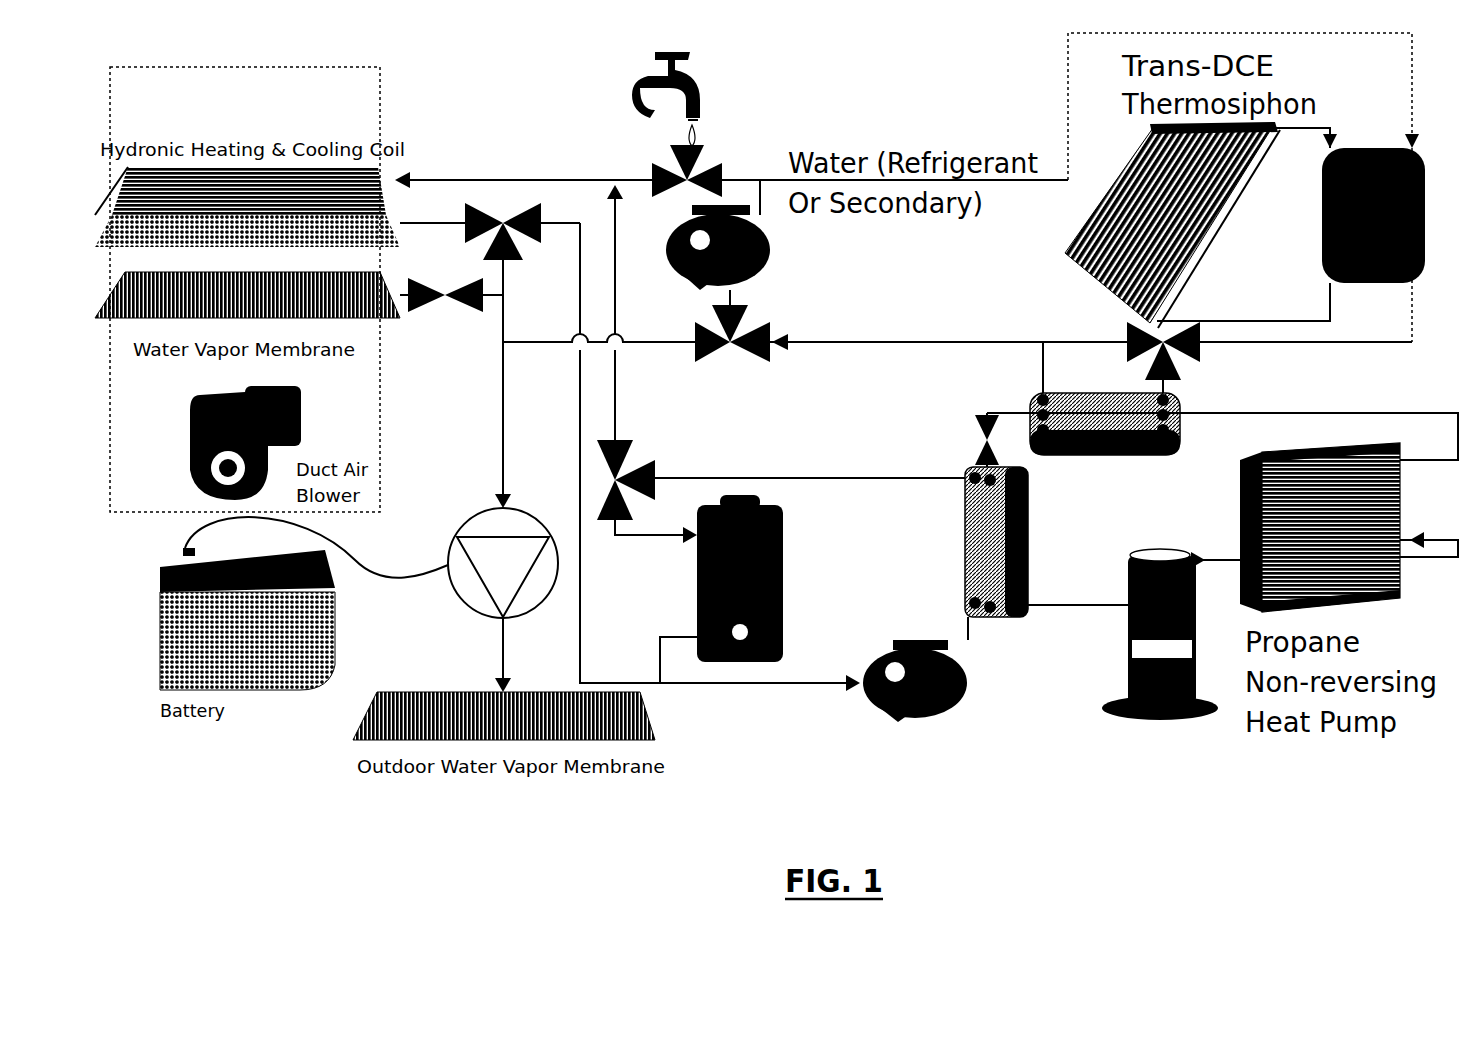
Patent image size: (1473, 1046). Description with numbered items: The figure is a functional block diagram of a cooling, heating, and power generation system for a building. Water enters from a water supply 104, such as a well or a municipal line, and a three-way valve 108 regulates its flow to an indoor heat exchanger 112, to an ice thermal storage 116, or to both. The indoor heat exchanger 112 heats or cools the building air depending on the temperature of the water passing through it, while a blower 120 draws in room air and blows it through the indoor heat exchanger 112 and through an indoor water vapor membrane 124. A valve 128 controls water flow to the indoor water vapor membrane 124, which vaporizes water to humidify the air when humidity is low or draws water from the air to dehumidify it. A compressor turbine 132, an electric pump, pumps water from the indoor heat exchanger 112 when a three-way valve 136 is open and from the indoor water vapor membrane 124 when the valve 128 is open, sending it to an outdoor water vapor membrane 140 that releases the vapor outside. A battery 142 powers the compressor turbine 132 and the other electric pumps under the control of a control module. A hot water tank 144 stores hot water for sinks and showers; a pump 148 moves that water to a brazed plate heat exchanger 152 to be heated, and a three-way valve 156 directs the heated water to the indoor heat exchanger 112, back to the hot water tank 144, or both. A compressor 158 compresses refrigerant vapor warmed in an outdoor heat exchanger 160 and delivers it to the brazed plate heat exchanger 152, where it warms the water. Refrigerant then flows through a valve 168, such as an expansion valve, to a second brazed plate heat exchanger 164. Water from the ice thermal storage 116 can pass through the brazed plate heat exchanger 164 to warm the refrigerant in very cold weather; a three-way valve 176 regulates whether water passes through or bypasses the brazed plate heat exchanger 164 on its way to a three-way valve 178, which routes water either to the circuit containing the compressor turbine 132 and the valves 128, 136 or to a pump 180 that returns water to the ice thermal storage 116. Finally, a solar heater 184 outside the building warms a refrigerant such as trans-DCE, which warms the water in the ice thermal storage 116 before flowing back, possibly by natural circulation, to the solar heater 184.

The water supply 104 is at (648, 100).
The three-way valve 108 is at (660, 178).
The indoor heat exchanger 112 is at (385, 180).
The ice thermal storage 116 is at (1322, 226).
The blower 120 is at (196, 437).
The indoor water vapor membrane 124 is at (385, 320).
The valve 128 is at (468, 292).
The compressor turbine 132 is at (460, 598).
The three-way valve 136 is at (523, 218).
The outdoor water vapor membrane 140 is at (656, 737).
The battery 142 is at (292, 676).
The hot water tank 144 is at (785, 565).
The pump 148 is at (958, 697).
The brazed plate heat exchanger 152 is at (1018, 552).
The three-way valve 156 is at (630, 448).
The compressor 158 is at (1180, 715).
The outdoor heat exchanger 160 is at (1262, 466).
The brazed plate heat exchanger 164 is at (1095, 460).
The valve 168 is at (982, 426).
The three-way valve 176 is at (1202, 352).
The three-way valve 178 is at (765, 360).
The pump 180 is at (760, 285).
The solar heater 184 is at (1145, 170).